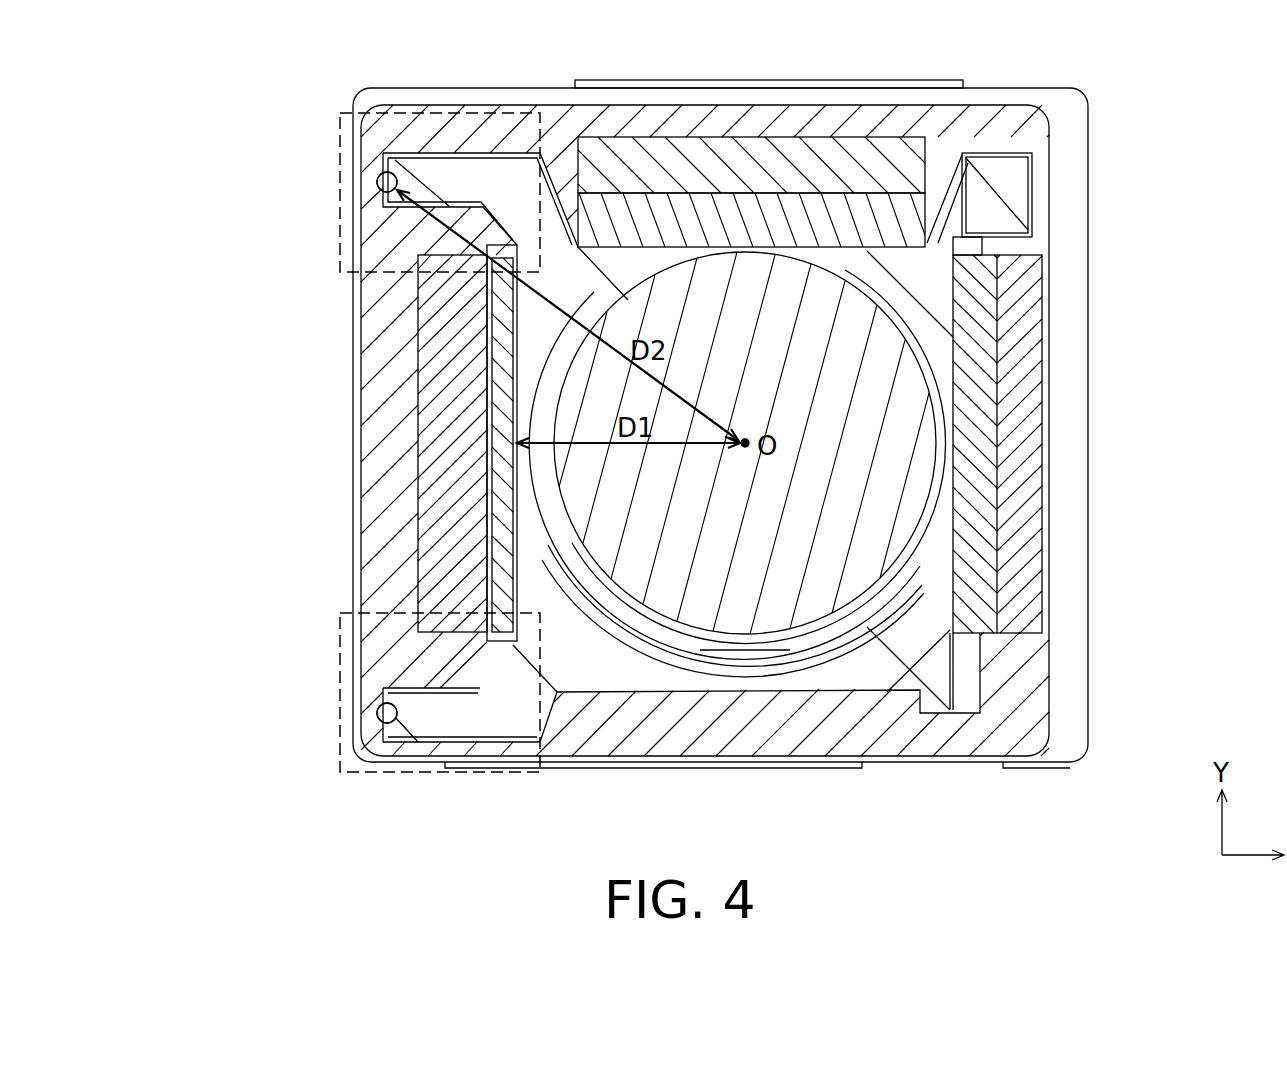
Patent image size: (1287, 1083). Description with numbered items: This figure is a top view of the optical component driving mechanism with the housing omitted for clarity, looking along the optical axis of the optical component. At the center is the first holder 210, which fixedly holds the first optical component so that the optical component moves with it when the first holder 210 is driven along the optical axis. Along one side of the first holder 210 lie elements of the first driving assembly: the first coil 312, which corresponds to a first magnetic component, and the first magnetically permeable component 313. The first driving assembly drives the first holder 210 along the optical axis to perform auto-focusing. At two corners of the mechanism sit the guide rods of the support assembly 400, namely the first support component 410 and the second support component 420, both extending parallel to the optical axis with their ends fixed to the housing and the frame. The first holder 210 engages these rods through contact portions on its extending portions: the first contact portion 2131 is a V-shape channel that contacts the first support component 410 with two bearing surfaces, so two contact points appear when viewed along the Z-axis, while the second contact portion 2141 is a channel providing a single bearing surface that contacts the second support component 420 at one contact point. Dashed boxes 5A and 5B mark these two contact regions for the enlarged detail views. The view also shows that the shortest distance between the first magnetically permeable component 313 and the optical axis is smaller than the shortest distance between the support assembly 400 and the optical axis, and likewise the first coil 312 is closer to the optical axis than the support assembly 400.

The first holder 210 is at (1030, 197).
The second contact portion 2141 is at (392, 172).
The first contact portion 2131 is at (392, 722).
The second support component 420 is at (378, 183).
The first support component 410 is at (378, 713).
The support assembly 400 is at (387, 447).
The first coil 312 is at (505, 485).
The first magnetically permeable component 313 is at (513, 405).
The detail region 5A is at (340, 690).
The detail region 5B is at (340, 183).